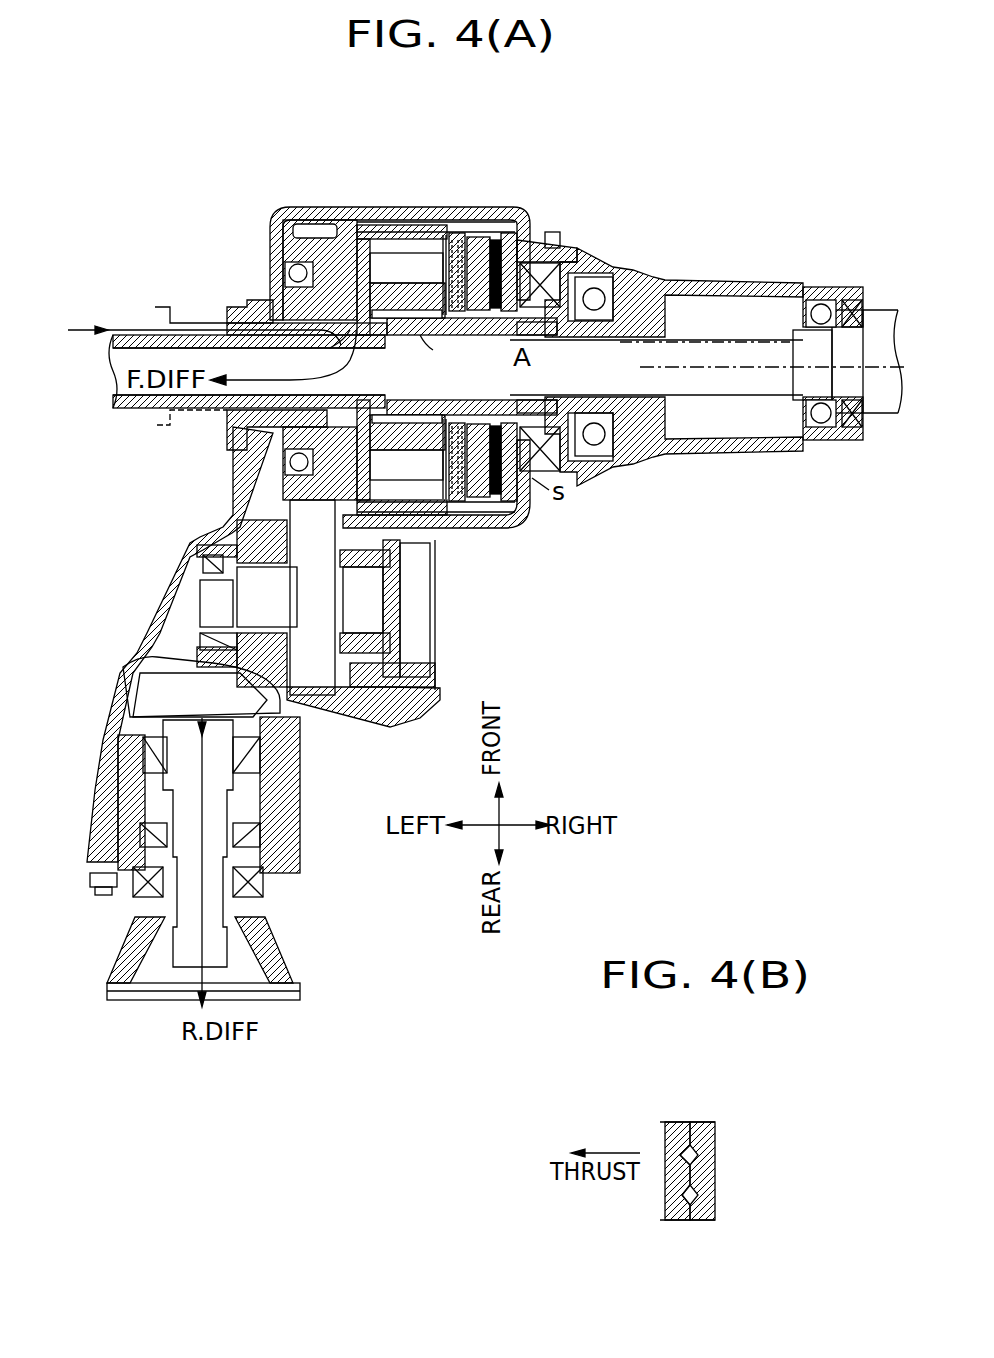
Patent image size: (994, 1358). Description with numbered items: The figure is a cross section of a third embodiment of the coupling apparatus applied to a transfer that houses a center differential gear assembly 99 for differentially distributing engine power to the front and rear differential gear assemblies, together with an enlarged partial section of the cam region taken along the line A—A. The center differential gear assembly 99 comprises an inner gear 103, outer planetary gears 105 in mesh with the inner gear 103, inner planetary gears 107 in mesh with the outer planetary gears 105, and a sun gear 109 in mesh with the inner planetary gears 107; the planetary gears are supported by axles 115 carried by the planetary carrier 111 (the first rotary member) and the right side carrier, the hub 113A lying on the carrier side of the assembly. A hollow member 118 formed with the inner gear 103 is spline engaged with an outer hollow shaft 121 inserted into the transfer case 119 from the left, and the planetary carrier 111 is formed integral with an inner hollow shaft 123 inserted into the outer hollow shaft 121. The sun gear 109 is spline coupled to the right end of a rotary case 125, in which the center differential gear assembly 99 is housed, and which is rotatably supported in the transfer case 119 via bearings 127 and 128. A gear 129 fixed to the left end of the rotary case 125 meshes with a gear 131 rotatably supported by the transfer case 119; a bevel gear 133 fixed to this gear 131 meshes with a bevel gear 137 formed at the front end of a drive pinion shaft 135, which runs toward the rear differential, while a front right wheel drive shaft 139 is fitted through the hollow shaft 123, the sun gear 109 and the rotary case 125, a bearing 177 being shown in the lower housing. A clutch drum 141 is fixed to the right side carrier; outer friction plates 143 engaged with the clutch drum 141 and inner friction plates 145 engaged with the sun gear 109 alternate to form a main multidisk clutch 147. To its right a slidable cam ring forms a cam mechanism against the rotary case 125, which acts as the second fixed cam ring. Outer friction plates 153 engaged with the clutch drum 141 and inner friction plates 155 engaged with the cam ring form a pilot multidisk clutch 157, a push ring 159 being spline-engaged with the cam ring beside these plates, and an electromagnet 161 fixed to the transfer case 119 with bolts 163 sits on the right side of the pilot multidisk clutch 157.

The center differential gear assembly 99 is at (366, 194).
The inner gear 103 is at (415, 240).
The outer planetary gears 105 is at (362, 335).
The inner planetary gears 107 is at (370, 360).
The sun gear 109 is at (487, 387).
The left planetary carrier 111 is at (224, 408).
The hub 113A is at (454, 353).
The axles 115 is at (280, 250).
The hollow member 118 is at (335, 345).
The transfer case 119 is at (521, 218).
The outer hollow shaft 121 is at (155, 307).
The inner hollow shaft 123 is at (228, 338).
The rotary case 125 is at (696, 1212).
The bearing 127 is at (288, 280).
The bearing 128 is at (606, 297).
The gear 129 is at (308, 232).
The gear 131 is at (287, 508).
The bevel gear 133 is at (257, 515).
The drive pinion shaft 135 is at (222, 772).
The bevel gear 137 is at (142, 700).
The front right wheel drive shaft 139 is at (705, 358).
The clutch drum 141 is at (440, 615).
The outer friction plates 143 is at (468, 405).
The inner friction plates 145 is at (423, 367).
The main multidisk clutch 147 is at (441, 545).
The outer friction plates 153 is at (504, 530).
The inner friction plates 155 is at (608, 424).
The pilot multidisk clutch 157 is at (530, 508).
The push ring 159 is at (498, 537).
The electromagnet 161 is at (575, 265).
The bolts 163 is at (553, 233).
The bearing 177 is at (365, 601).